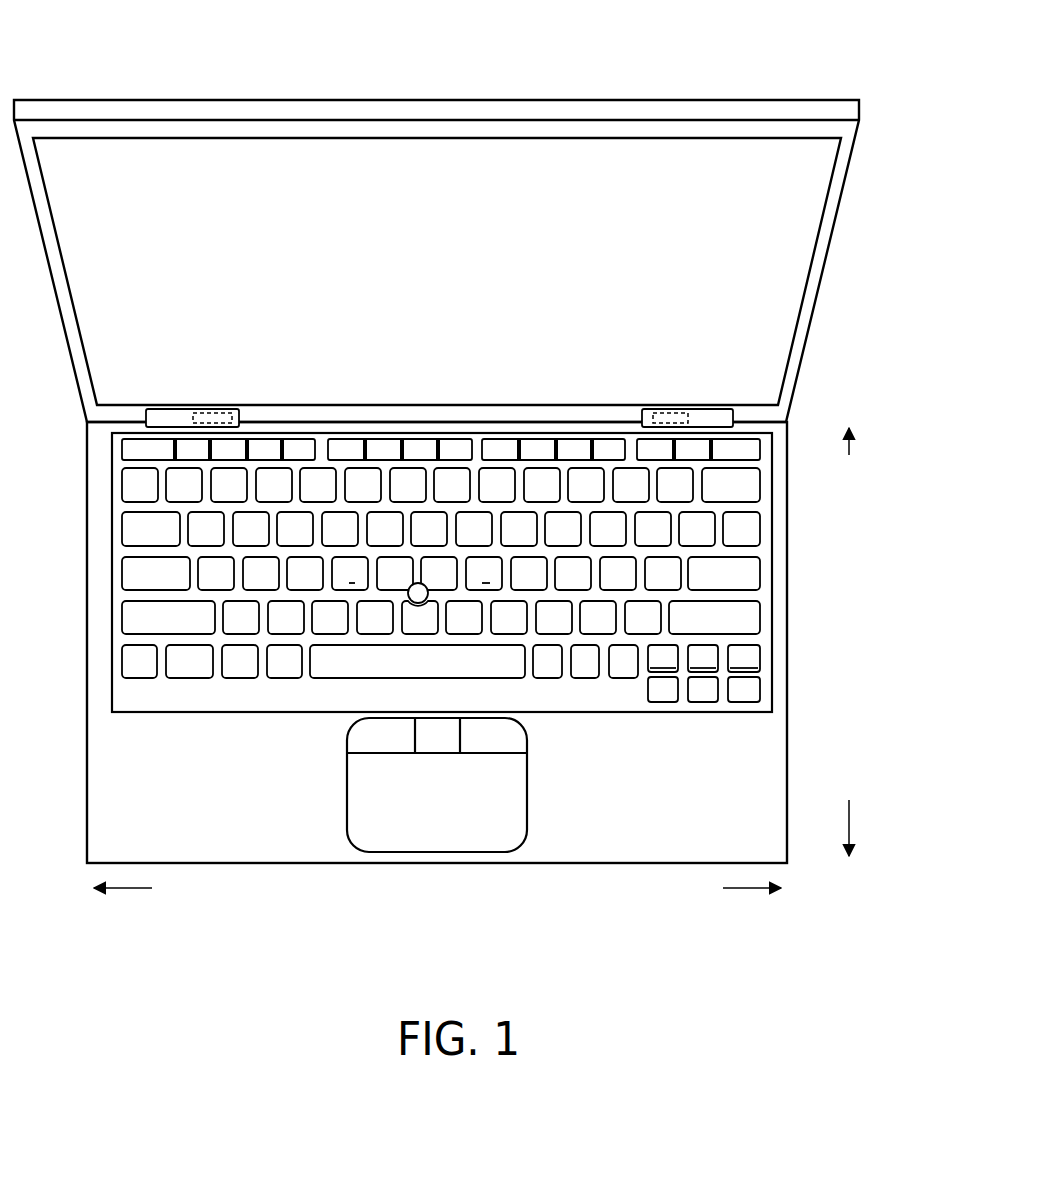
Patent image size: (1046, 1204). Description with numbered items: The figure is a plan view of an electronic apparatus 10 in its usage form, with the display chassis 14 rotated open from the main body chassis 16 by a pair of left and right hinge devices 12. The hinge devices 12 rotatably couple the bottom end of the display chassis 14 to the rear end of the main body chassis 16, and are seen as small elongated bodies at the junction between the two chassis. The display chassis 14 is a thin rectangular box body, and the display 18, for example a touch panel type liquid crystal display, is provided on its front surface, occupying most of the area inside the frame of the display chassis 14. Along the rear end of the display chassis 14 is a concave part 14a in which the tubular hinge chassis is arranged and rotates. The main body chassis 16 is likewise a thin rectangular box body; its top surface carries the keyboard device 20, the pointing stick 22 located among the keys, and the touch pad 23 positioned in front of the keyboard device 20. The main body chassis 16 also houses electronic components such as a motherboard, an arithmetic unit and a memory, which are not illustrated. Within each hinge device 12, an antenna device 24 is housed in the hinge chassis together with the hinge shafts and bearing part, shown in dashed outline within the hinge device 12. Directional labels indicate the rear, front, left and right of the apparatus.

The electronic apparatus 10 is at (52, 41).
The hinge device 12 is at (439, 388).
The display chassis 14 is at (463, 261).
The concave part 14a is at (805, 315).
The main body chassis 16 is at (805, 606).
The display 18 is at (786, 259).
The keyboard device 20 is at (393, 520).
The pointing stick 22 is at (418, 583).
The touch pad 23 is at (450, 832).
The antenna device 24 is at (215, 412).